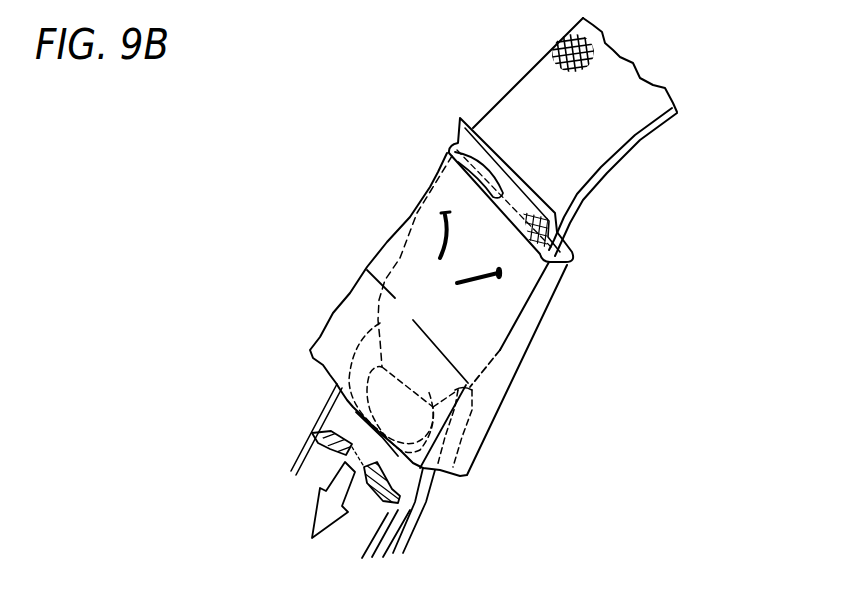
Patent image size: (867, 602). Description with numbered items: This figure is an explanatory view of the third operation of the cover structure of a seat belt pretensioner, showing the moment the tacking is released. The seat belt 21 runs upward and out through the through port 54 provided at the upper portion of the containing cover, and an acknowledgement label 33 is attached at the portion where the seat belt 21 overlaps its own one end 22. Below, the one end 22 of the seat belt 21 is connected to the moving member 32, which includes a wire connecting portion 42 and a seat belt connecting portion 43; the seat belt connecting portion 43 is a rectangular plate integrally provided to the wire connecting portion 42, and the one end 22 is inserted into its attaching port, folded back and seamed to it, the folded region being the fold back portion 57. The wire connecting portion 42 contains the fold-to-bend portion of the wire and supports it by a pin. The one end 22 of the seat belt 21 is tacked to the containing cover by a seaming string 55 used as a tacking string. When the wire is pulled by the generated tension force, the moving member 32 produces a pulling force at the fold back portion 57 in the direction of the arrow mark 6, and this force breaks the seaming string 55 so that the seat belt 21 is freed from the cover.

The seat belt 21 is at (622, 130).
The acknowledgement label 33 is at (469, 146).
The through port 54 is at (446, 153).
The one end of the seat belt 22 is at (417, 260).
The seaming string (tacking string) 55 is at (437, 227).
The fold back portion 57 is at (490, 327).
The moving member 32 is at (264, 240).
The seat belt connecting portion 43 is at (355, 356).
The wire connecting portion 42 is at (310, 443).
The arrow mark 6 is at (344, 500).